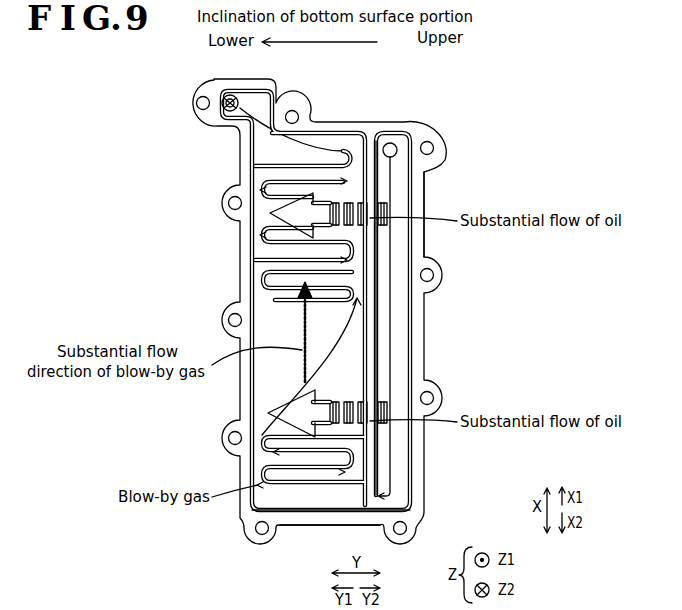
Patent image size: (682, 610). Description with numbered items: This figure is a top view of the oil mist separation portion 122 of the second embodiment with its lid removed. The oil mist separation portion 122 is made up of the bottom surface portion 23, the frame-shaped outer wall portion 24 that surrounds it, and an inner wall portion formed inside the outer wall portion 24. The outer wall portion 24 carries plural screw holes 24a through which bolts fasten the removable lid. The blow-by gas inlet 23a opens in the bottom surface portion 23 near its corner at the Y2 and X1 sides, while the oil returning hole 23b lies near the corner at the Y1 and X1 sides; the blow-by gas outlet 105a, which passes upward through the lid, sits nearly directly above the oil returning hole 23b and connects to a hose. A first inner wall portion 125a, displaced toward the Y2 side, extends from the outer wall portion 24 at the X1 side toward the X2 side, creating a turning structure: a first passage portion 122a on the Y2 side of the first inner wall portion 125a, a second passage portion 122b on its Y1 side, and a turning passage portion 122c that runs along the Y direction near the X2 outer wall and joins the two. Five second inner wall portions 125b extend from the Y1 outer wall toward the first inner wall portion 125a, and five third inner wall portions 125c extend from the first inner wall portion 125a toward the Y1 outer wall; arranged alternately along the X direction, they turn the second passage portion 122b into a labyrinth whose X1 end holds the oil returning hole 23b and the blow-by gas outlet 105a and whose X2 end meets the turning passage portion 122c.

The oil mist separation portion 122 is at (440, 95).
The first passage portion 122a is at (399, 139).
The second passage portion 122b is at (255, 409).
The turning passage portion 122c is at (296, 511).
The blow-by gas outlet 105a is at (233, 94).
The screw holes 24a is at (196, 104).
The outer wall portion 24 is at (412, 345).
The bottom surface portion 23 is at (370, 478).
The blow-by gas inlet 23a is at (425, 164).
The oil returning hole 23b is at (236, 110).
The first inner wall portion 125a is at (374, 336).
The second inner wall portions 125b is at (261, 182).
The third inner wall portions 125c is at (362, 188).